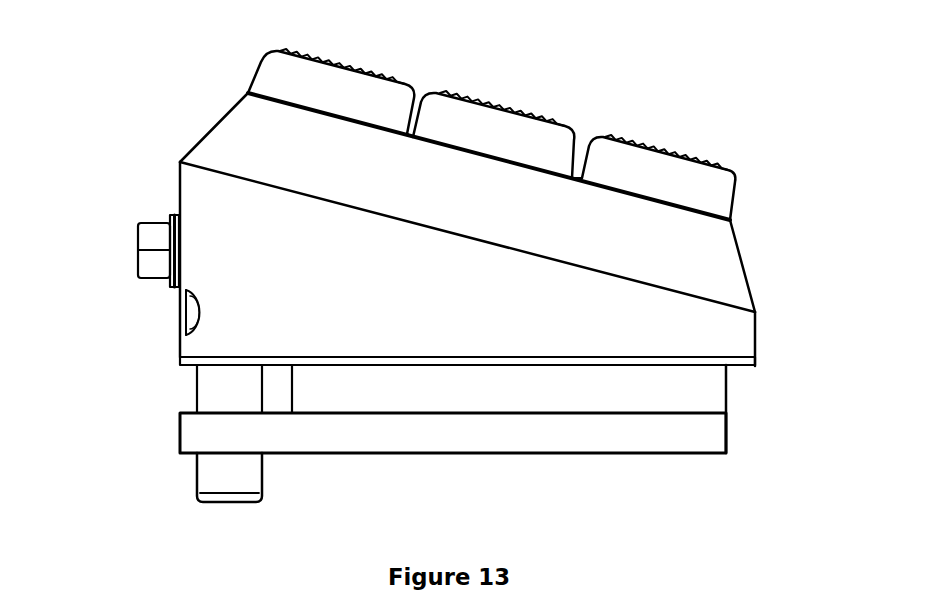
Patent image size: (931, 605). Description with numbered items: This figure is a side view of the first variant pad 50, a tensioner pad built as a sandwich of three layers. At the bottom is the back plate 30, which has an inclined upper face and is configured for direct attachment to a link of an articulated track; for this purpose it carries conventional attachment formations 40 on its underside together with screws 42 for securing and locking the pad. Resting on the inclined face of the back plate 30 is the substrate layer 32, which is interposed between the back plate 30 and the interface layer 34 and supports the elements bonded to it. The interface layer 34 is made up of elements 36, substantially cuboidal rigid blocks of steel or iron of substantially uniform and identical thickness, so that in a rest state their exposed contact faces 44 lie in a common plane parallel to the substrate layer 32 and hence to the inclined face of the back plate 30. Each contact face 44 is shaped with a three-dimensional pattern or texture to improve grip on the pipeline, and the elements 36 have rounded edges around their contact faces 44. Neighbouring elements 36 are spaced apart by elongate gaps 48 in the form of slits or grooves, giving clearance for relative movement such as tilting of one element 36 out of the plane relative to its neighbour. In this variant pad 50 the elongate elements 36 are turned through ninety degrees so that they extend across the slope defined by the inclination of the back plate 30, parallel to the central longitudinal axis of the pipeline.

The back plate 30 is at (738, 335).
The substrate layer 32 is at (720, 273).
The interface layer 34 is at (672, 97).
The elements 36 is at (515, 125).
The attachment formations 40 is at (715, 438).
The screws 42 is at (148, 242).
The contact faces 44 is at (348, 65).
The elongate gaps 48 is at (413, 105).
The first variant pad 50 is at (112, 118).